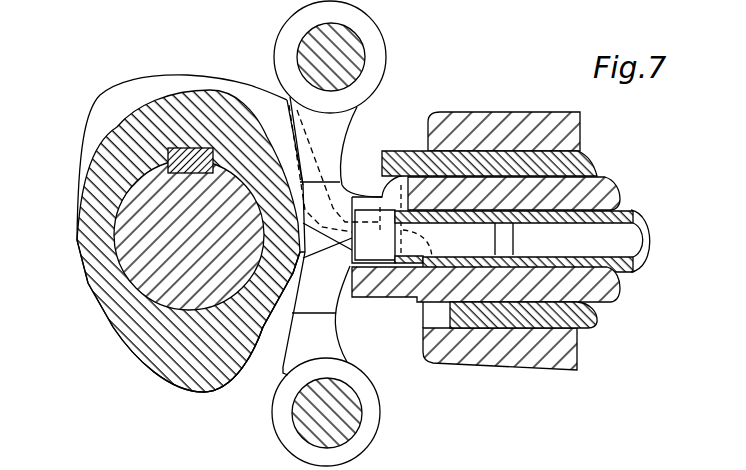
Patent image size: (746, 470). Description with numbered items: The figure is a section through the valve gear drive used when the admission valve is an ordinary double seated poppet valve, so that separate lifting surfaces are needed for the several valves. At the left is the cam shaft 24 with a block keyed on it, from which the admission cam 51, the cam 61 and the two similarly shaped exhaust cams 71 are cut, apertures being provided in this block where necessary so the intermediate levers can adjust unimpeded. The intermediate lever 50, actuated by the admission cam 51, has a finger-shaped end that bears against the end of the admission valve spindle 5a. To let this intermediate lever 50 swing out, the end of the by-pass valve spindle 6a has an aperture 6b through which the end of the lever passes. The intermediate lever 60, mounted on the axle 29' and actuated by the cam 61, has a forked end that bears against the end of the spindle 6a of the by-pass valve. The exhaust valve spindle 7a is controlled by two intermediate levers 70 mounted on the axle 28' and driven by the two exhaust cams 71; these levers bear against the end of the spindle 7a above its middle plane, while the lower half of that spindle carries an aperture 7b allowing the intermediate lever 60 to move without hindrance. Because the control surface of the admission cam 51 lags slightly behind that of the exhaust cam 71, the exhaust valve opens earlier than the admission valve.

The exhaust cam 71 is at (163, 78).
The admission cam 51 is at (203, 100).
The cam shaft 24 is at (133, 246).
The cam 61 is at (238, 362).
The axle 28' is at (315, 57).
The axle 29' is at (345, 412).
The intermediate lever 70 is at (348, 140).
The intermediate lever 50 is at (328, 167).
The intermediate lever 60 is at (323, 337).
The aperture 6b is at (376, 203).
The exhaust valve spindle 7a is at (465, 165).
The admission valve spindle 5a is at (617, 217).
The aperture 7b is at (430, 248).
The by-pass valve spindle 6a is at (478, 297).